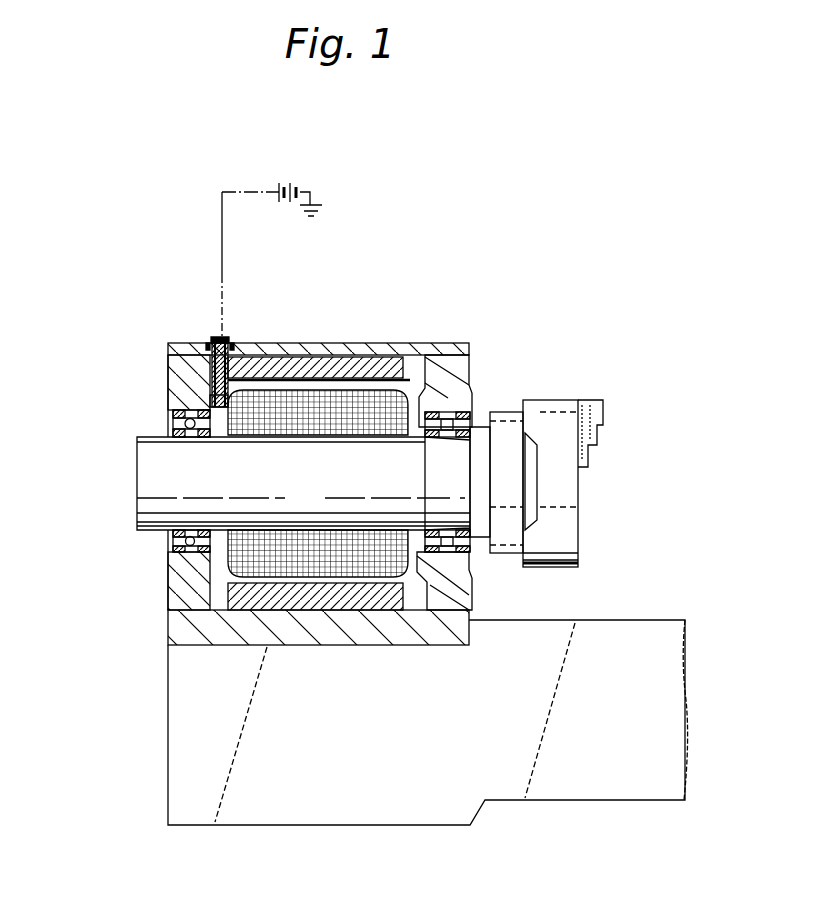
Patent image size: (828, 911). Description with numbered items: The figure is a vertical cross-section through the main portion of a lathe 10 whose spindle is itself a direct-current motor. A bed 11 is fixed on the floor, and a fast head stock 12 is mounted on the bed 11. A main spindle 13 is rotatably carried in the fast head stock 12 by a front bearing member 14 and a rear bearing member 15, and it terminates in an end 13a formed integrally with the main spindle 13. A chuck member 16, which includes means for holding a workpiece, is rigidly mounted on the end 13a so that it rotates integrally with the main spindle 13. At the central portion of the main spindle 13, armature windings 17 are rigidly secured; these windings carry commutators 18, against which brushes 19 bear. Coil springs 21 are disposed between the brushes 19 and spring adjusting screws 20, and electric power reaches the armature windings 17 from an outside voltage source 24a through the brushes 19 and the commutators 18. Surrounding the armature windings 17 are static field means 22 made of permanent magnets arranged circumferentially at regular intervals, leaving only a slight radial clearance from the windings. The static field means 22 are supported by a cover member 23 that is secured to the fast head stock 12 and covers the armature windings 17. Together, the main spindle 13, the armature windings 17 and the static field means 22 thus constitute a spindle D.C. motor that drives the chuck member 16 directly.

The lathe 10 is at (75, 272).
The bed 11 is at (377, 805).
The fast head stock 12 is at (264, 343).
The main spindle 13 is at (146, 458).
The end 13a is at (506, 425).
The front bearing member 14 is at (463, 412).
The rear bearing member 15 is at (170, 427).
The chuck member 16 is at (565, 413).
The armature windings 17 is at (337, 395).
The commutators 18 is at (214, 400).
The brushes 19 is at (212, 338).
The spring adjusting screws 20 is at (219, 340).
The coil springs 21 is at (241, 340).
The static field means 22 is at (295, 345).
The cover member 23 is at (437, 343).
The outside voltage source 24a is at (285, 182).